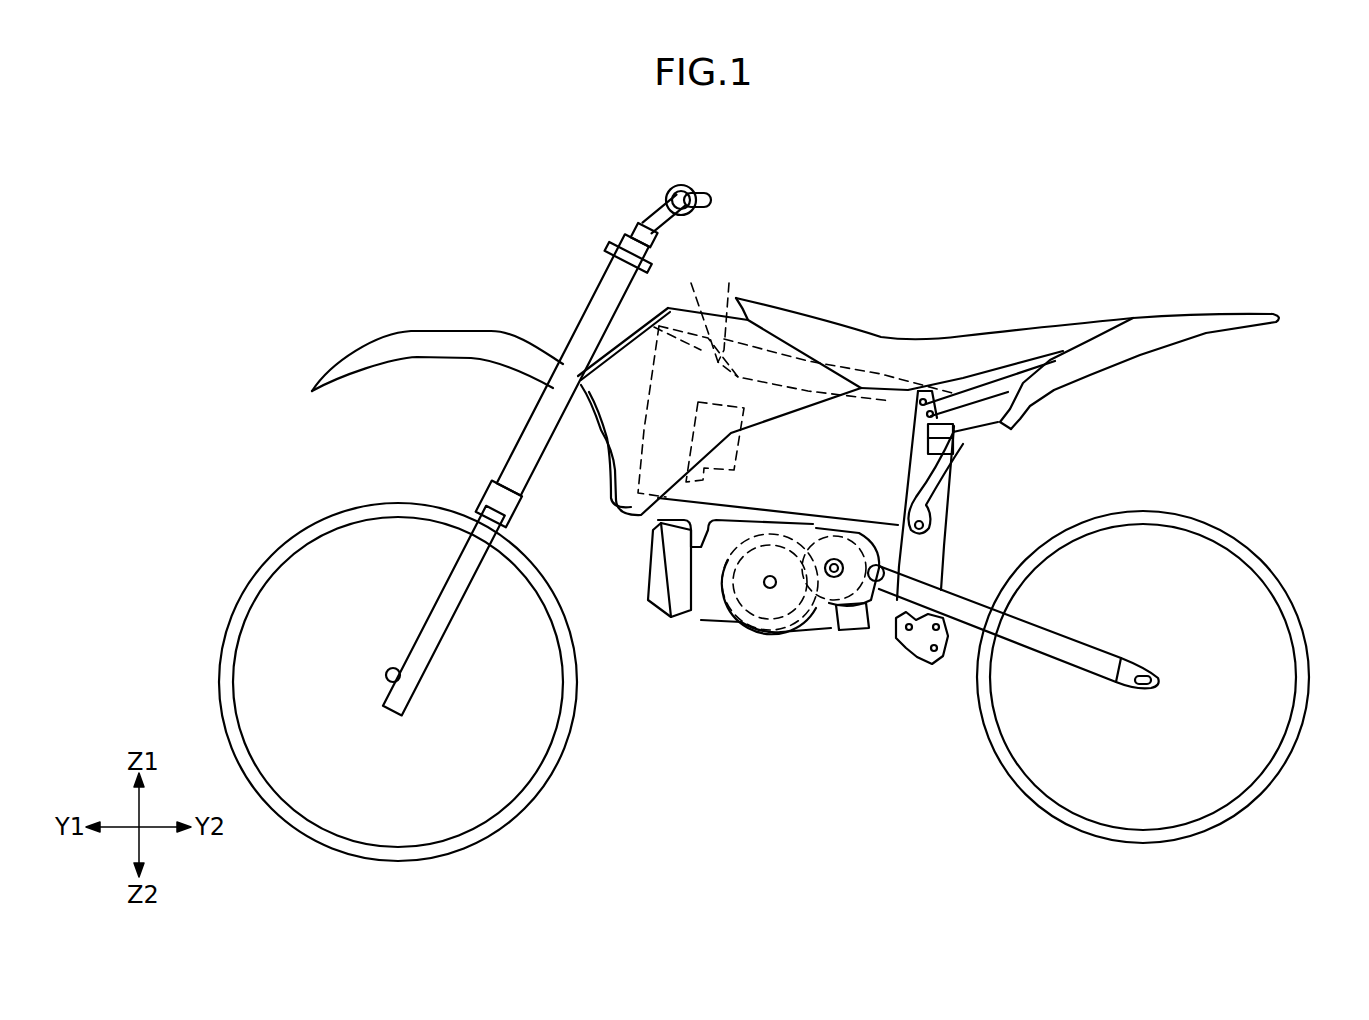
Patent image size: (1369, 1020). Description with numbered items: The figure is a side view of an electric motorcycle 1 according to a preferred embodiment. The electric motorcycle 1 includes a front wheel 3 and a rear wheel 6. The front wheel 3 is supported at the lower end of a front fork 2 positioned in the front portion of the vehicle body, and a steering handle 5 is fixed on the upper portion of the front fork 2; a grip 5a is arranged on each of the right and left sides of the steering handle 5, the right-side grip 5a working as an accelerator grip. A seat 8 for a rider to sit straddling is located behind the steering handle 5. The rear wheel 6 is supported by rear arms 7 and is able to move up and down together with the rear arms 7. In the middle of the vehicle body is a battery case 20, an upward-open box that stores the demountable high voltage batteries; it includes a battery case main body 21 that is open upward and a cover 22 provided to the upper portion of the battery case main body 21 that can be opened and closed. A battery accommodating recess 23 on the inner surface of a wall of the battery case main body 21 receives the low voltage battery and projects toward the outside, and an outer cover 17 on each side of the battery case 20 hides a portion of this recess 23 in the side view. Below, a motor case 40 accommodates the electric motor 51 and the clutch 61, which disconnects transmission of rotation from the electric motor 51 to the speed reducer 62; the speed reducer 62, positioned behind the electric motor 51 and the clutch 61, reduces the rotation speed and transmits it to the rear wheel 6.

The electric motorcycle 1 is at (975, 220).
The front fork 2 is at (530, 436).
The front wheel 3 is at (568, 728).
The steering handle 5 is at (660, 217).
The grip 5a is at (695, 200).
The rear wheel 6 is at (1297, 747).
The rear arms 7 is at (1075, 645).
The seat 8 is at (1017, 338).
The outer cover 17 is at (630, 363).
The battery case 20 is at (740, 257).
The battery case main body 21 is at (720, 318).
The cover 22 is at (705, 332).
The battery accommodating recess 23 is at (738, 447).
The motor case 40 is at (707, 605).
The electric motor 51 is at (738, 518).
The clutch 61 is at (768, 623).
The speed reducer 62 is at (860, 587).